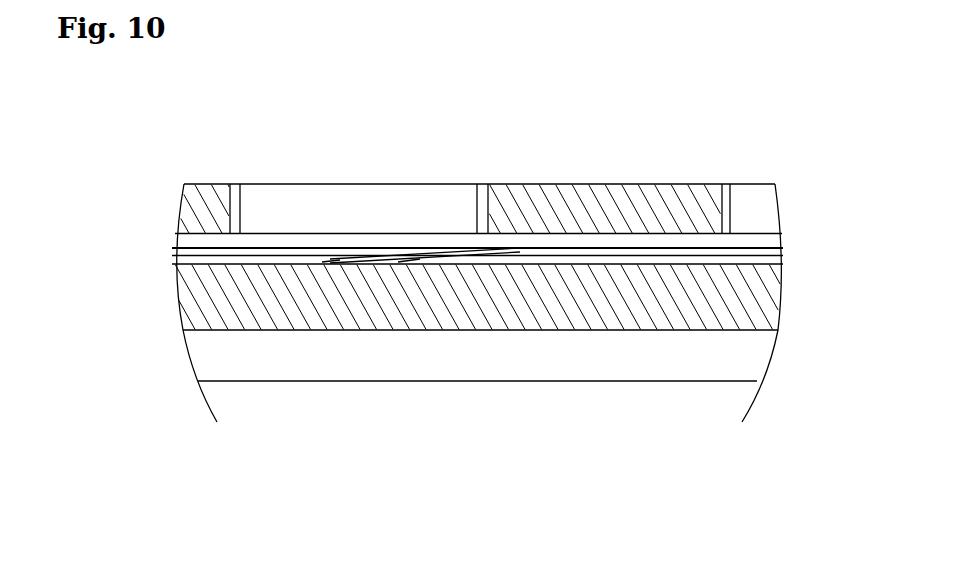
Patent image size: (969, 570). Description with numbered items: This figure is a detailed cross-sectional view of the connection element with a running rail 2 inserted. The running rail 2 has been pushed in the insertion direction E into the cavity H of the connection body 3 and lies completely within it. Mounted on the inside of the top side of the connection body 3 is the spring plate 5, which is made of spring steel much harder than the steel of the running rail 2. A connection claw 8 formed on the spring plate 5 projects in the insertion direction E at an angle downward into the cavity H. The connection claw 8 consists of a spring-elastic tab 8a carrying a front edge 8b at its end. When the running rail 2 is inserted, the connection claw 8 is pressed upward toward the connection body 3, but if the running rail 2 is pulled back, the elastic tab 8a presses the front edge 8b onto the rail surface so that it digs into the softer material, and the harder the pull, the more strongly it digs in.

The connection body 3 is at (595, 184).
The spring plate 5 is at (783, 251).
The running rail 2 is at (782, 301).
The connection claw 8 is at (364, 250).
The spring-elastic tab 8a is at (398, 267).
The front edge 8b is at (322, 265).
The cavity H is at (714, 390).
The insertion direction E is at (784, 457).